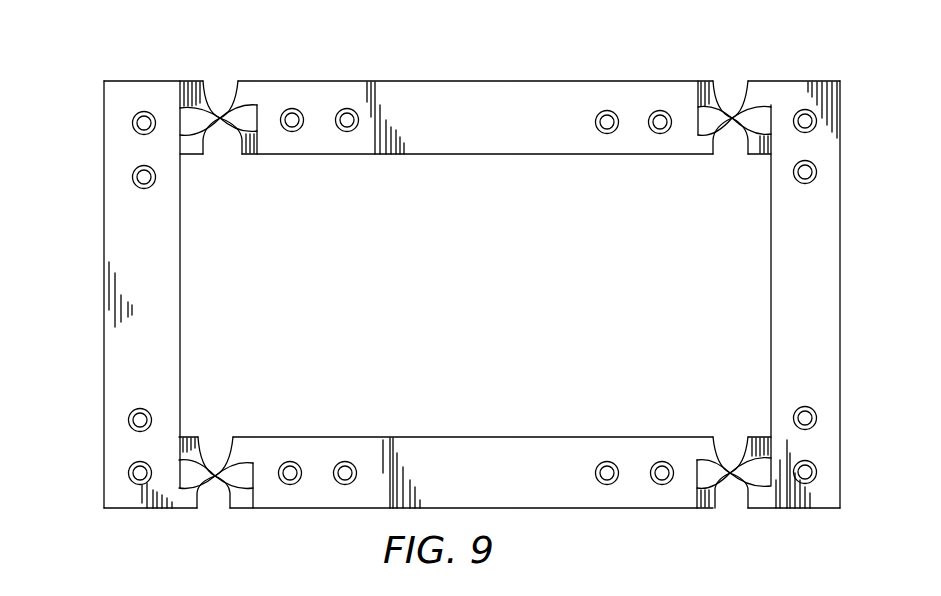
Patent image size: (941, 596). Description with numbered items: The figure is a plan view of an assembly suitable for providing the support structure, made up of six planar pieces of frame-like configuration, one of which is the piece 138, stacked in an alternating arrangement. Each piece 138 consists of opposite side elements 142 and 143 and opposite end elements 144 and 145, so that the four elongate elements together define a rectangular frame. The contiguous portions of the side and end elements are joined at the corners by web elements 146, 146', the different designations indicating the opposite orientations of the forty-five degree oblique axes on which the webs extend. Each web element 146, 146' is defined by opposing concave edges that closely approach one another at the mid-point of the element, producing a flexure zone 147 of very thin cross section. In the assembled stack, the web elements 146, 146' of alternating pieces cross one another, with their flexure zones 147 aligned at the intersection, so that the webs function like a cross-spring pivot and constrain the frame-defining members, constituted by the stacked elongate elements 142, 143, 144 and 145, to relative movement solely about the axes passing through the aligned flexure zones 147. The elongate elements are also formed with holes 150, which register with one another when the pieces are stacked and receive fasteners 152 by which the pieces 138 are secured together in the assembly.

The planar piece 138 is at (842, 135).
The side element 142 is at (475, 457).
The side element 143 is at (527, 102).
The end element 144 is at (830, 350).
The end element 145 is at (167, 322).
The web element 146 is at (502, 291).
The web element 146' is at (502, 271).
The flexure zone 147 is at (220, 118).
The hole 150 is at (140, 135).
The fastener 152 is at (144, 111).